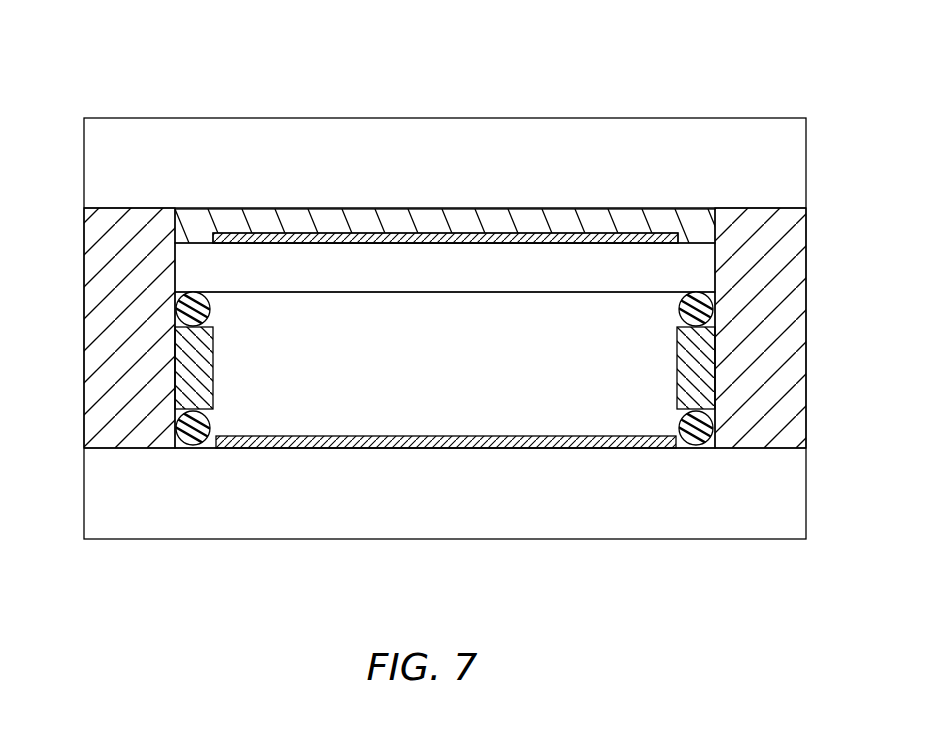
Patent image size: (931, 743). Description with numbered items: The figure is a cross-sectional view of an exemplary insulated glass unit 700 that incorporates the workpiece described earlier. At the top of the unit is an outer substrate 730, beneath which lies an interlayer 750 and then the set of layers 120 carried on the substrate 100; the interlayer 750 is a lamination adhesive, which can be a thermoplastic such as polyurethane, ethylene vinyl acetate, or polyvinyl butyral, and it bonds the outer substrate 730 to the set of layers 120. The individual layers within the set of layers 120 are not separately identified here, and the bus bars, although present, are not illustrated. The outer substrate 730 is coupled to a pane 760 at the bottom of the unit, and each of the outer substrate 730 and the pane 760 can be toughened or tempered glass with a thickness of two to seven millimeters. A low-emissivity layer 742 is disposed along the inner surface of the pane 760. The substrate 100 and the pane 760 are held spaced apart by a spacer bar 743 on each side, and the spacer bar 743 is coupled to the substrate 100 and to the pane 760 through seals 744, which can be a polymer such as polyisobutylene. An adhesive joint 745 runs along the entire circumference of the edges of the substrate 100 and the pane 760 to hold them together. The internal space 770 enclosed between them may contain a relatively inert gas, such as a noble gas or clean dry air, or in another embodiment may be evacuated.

The insulated glass unit 700 is at (118, 56).
The outer substrate 730 is at (466, 181).
The pane 760 is at (375, 523).
The adhesive joint 745 is at (95, 335).
The interlayer 750 is at (598, 216).
The set of layers 120 is at (352, 233).
The substrate 100 is at (466, 281).
The internal space 770 is at (467, 377).
The low-emissivity layer 742 is at (305, 440).
The spacer bar 743 is at (208, 358).
The seals 744 is at (203, 310).